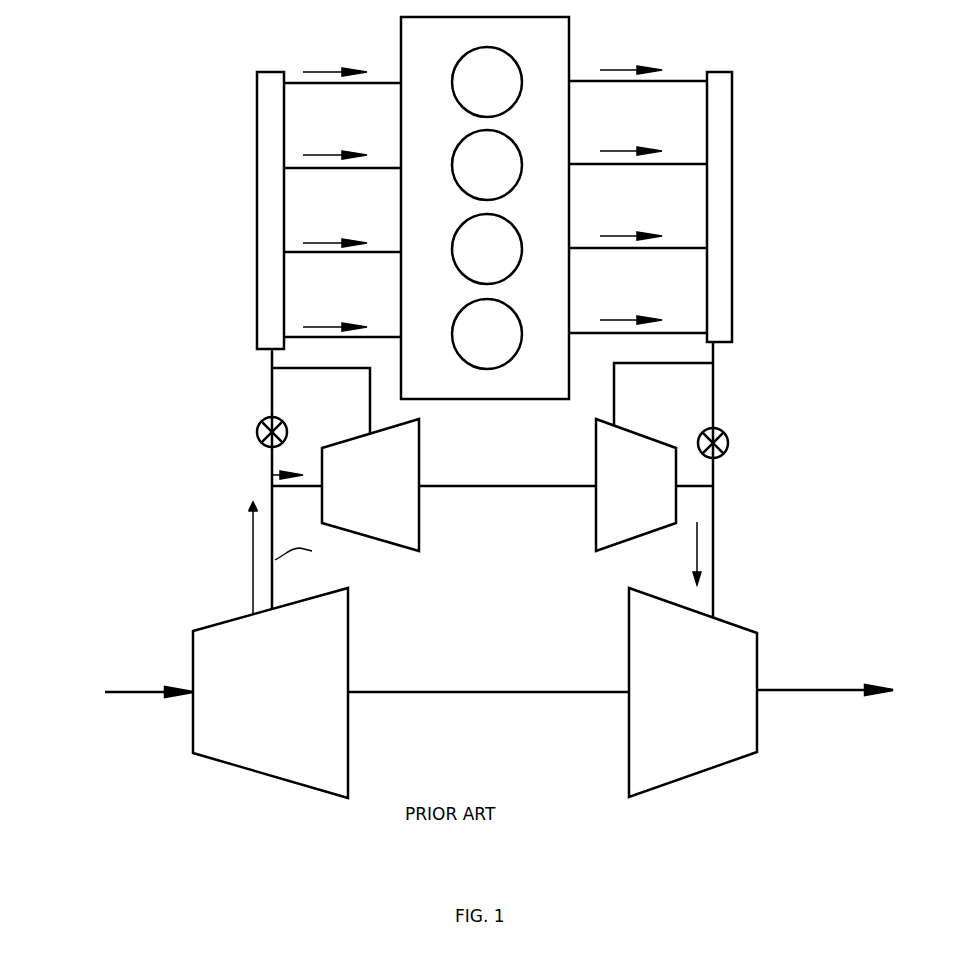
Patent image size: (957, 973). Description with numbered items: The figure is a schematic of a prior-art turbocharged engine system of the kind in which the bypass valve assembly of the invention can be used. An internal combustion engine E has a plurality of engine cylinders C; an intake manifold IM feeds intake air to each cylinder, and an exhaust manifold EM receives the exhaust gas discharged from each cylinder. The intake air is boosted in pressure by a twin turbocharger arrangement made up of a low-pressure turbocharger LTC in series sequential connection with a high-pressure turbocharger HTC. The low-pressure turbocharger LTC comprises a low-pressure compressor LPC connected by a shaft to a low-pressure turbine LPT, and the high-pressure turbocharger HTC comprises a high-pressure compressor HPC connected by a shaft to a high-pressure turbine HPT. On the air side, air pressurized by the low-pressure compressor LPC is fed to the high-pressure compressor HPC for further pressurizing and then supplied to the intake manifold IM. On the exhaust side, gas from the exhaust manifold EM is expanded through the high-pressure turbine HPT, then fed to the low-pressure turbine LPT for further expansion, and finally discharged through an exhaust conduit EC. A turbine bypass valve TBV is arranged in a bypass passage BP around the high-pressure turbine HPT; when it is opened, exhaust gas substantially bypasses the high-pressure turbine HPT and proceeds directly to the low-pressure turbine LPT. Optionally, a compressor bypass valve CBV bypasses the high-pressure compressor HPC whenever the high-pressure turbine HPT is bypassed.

The internal combustion engine E is at (406, 60).
The engine cylinders C is at (498, 103).
The intake manifold IM is at (268, 249).
The exhaust manifold EM is at (732, 222).
The compressor bypass valve CBV is at (259, 436).
The high-pressure turbocharger HTC is at (421, 505).
The high-pressure compressor HPC is at (395, 523).
The high-pressure turbine HPT is at (603, 507).
The bypass passage BP is at (715, 402).
The turbine bypass valve TBV is at (727, 443).
The low-pressure turbocharger LTC is at (412, 687).
The low-pressure compressor LPC is at (220, 640).
The low-pressure turbine LPT is at (725, 662).
The exhaust conduit EC is at (803, 690).